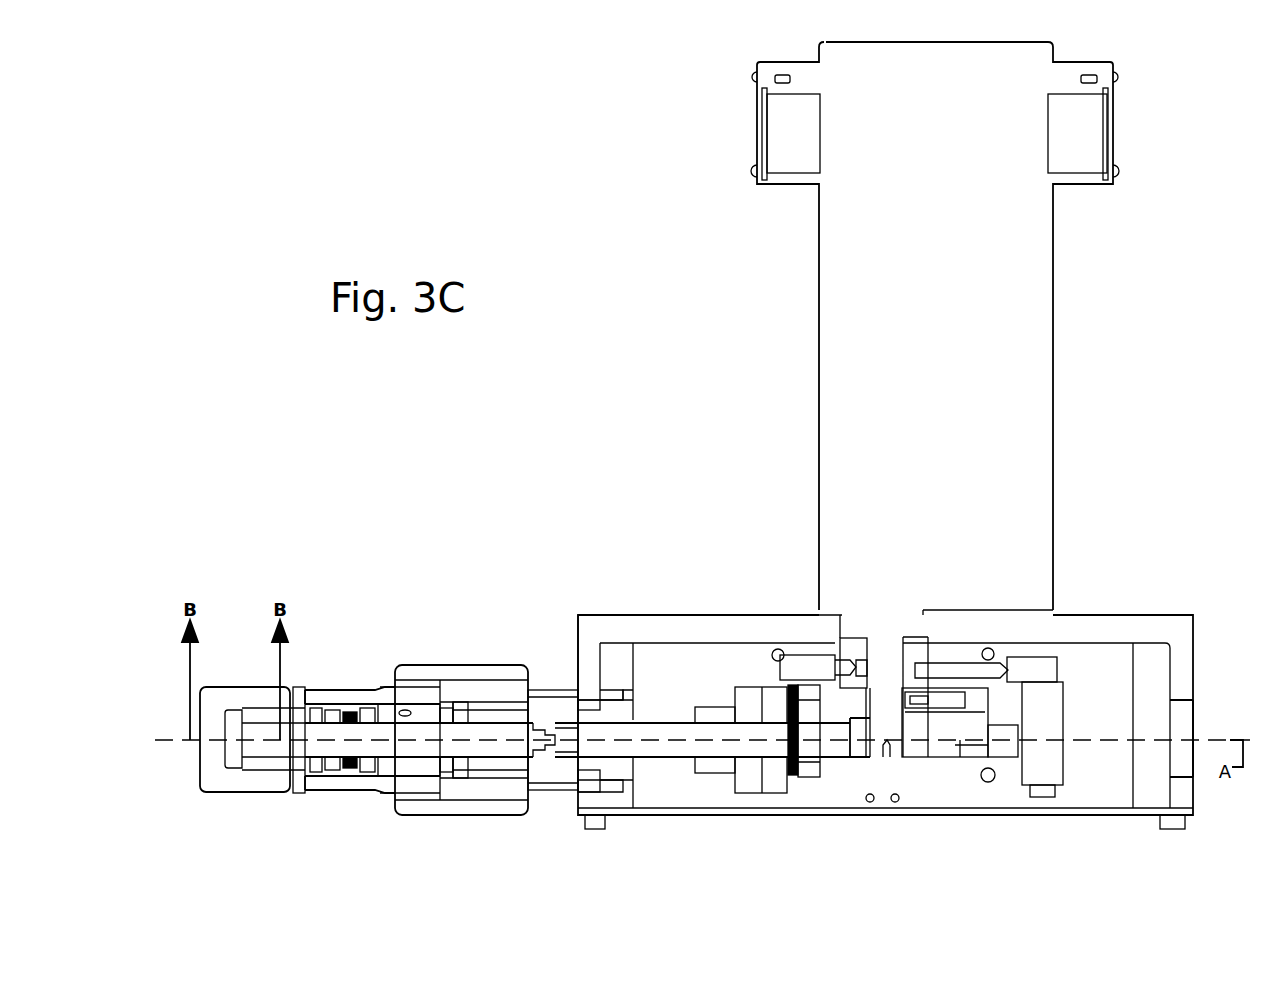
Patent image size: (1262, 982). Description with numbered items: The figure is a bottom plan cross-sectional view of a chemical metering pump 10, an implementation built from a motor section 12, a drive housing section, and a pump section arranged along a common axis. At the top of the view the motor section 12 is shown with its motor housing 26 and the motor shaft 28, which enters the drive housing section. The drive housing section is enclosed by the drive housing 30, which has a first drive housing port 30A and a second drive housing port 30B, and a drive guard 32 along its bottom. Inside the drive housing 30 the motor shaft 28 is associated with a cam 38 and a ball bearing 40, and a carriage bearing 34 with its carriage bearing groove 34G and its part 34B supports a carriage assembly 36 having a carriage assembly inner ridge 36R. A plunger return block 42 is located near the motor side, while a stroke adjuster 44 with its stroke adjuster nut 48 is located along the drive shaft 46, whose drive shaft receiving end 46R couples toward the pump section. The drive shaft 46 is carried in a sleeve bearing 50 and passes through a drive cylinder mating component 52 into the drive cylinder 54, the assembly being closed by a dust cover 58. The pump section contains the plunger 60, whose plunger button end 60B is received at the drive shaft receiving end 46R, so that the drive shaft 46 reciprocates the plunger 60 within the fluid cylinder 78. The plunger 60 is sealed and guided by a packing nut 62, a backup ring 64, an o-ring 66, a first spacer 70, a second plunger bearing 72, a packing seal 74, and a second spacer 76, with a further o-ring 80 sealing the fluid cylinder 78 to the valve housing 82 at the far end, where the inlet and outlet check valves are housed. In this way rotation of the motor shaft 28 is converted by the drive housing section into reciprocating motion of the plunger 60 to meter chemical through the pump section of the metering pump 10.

The metering pump 10 is at (548, 146).
The motor section 12 is at (1092, 308).
The motor housing 26 is at (1054, 515).
The motor shaft 28 is at (928, 653).
The drive housing 30 is at (1195, 648).
The first drive housing port 30A is at (572, 688).
The second drive housing port 30B is at (1195, 718).
The drive guard 32 is at (900, 817).
The carriage bearing 34 is at (847, 650).
The bracket rail 34B is at (1000, 665).
The carriage bearing groove 34G is at (868, 668).
The carriage assembly 36 is at (775, 665).
The carriage assembly inner ridge 36R is at (832, 667).
The cam 38 is at (923, 757).
The ball bearing 40 is at (1003, 760).
The plunger return block 42 is at (1070, 767).
The stroke adjuster 44 is at (743, 765).
The drive shaft 46 is at (707, 748).
The drive shaft receiving end 46R is at (570, 748).
The stroke adjuster nut 48 is at (770, 783).
The sleeve bearing 50 is at (618, 762).
The drive cylinder mating component 52 is at (612, 782).
The drive cylinder 54 is at (537, 690).
The dust cover 58 is at (510, 663).
The plunger 60 is at (508, 750).
The plunger button end 60B is at (565, 758).
The packing nut 62 is at (468, 777).
The backup ring 64 is at (340, 707).
The o-ring 66 is at (335, 707).
The first spacer 70 is at (413, 707).
The second plunger bearing 72 is at (378, 707).
The packing seal 74 is at (353, 707).
The second spacer 76 is at (318, 770).
The fluid cylinder 78 is at (298, 795).
The o-ring 80 is at (292, 772).
The valve housing 82 is at (205, 790).